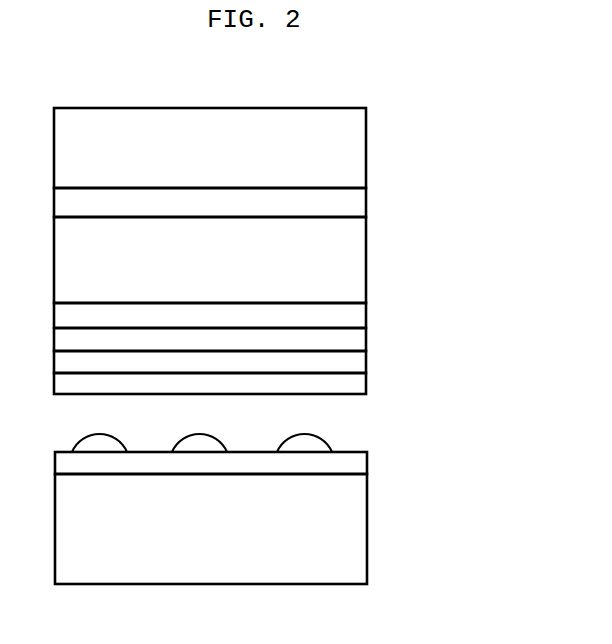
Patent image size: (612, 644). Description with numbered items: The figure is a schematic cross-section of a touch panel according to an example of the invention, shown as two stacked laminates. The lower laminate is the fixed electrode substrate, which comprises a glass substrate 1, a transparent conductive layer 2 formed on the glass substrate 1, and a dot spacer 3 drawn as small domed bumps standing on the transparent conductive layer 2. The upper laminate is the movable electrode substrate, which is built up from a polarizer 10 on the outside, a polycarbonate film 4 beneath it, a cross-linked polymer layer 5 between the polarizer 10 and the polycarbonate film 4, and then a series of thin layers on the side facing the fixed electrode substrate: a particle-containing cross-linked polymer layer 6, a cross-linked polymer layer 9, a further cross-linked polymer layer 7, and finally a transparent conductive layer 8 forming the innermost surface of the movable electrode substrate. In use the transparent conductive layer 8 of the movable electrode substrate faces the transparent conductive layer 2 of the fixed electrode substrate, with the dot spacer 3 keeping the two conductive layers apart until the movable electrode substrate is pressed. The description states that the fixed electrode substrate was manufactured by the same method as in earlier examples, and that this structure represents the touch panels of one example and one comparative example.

The glass substrate 1 is at (348, 543).
The transparent conductive layer 2 is at (355, 459).
The dot spacer 3 is at (328, 440).
The polycarbonate film 4 is at (345, 233).
The cross-linked polymer layer 5 is at (345, 198).
The cross-linked polymer layer containing fine particles 6 is at (347, 315).
The cross-linked polymer layer 7 is at (353, 360).
The transparent conductive layer 8 is at (353, 382).
The cross-linked polymer layer 9 is at (350, 340).
The polarizer 10 is at (350, 145).